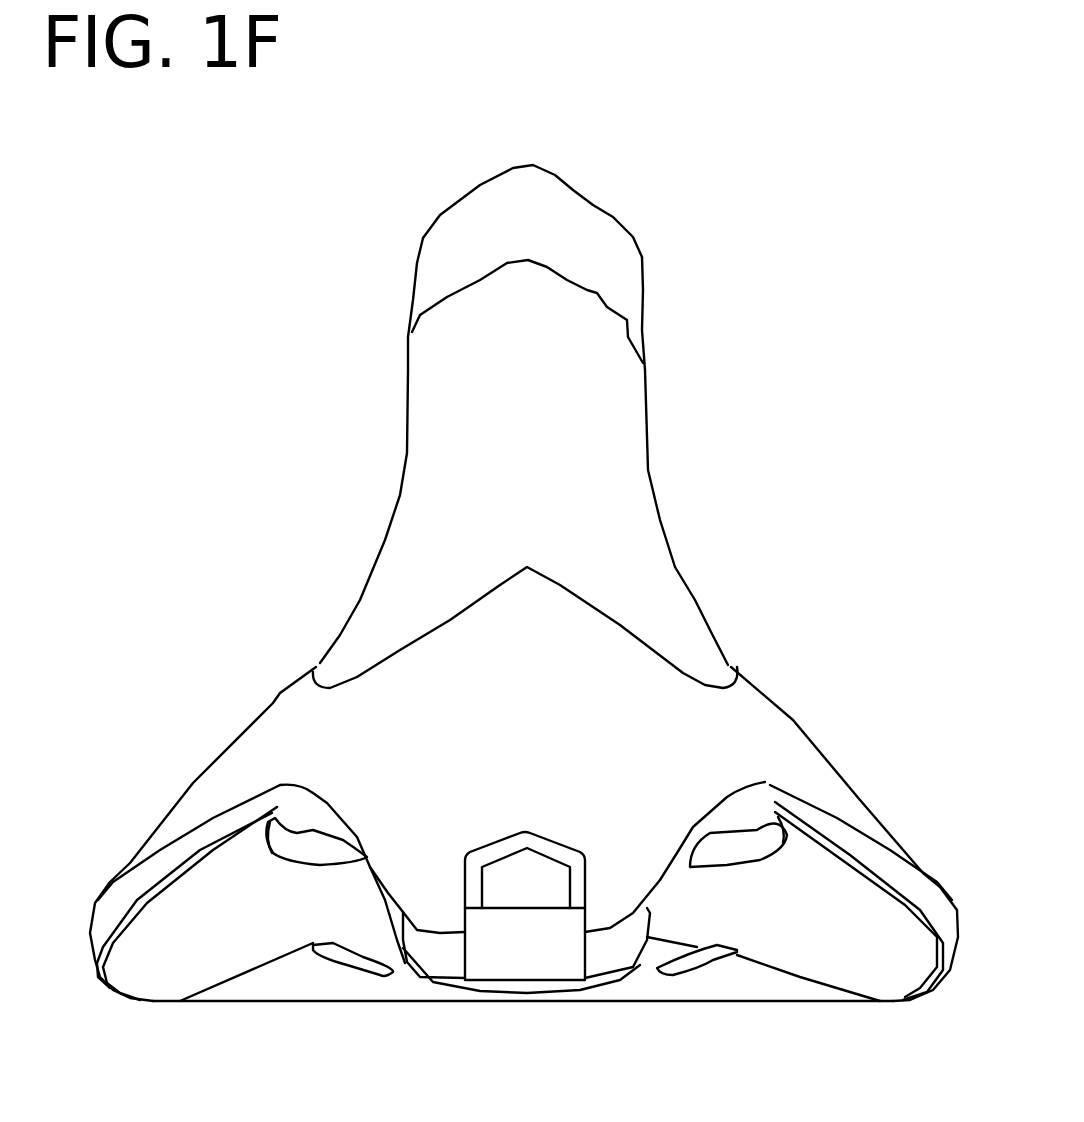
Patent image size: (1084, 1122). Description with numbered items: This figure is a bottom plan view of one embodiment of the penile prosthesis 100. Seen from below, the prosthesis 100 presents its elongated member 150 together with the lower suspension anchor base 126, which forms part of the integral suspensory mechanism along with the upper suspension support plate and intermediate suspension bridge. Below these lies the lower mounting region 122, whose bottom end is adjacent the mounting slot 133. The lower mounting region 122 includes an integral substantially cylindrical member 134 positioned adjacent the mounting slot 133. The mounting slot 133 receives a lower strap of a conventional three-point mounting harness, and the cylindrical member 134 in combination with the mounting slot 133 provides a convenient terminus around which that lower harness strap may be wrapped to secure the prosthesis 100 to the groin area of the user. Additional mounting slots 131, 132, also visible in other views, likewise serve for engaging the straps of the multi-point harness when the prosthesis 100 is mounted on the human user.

The penile prosthesis 100 is at (842, 63).
The lower mounting region 122 is at (683, 737).
The lower suspension anchor base 126 is at (600, 493).
The elongated member 150 is at (513, 218).
The mounting slot 131 is at (702, 958).
The mounting slot 132 is at (350, 960).
The mounting slot 133 is at (517, 890).
The integral cylindrical member 134 is at (540, 952).